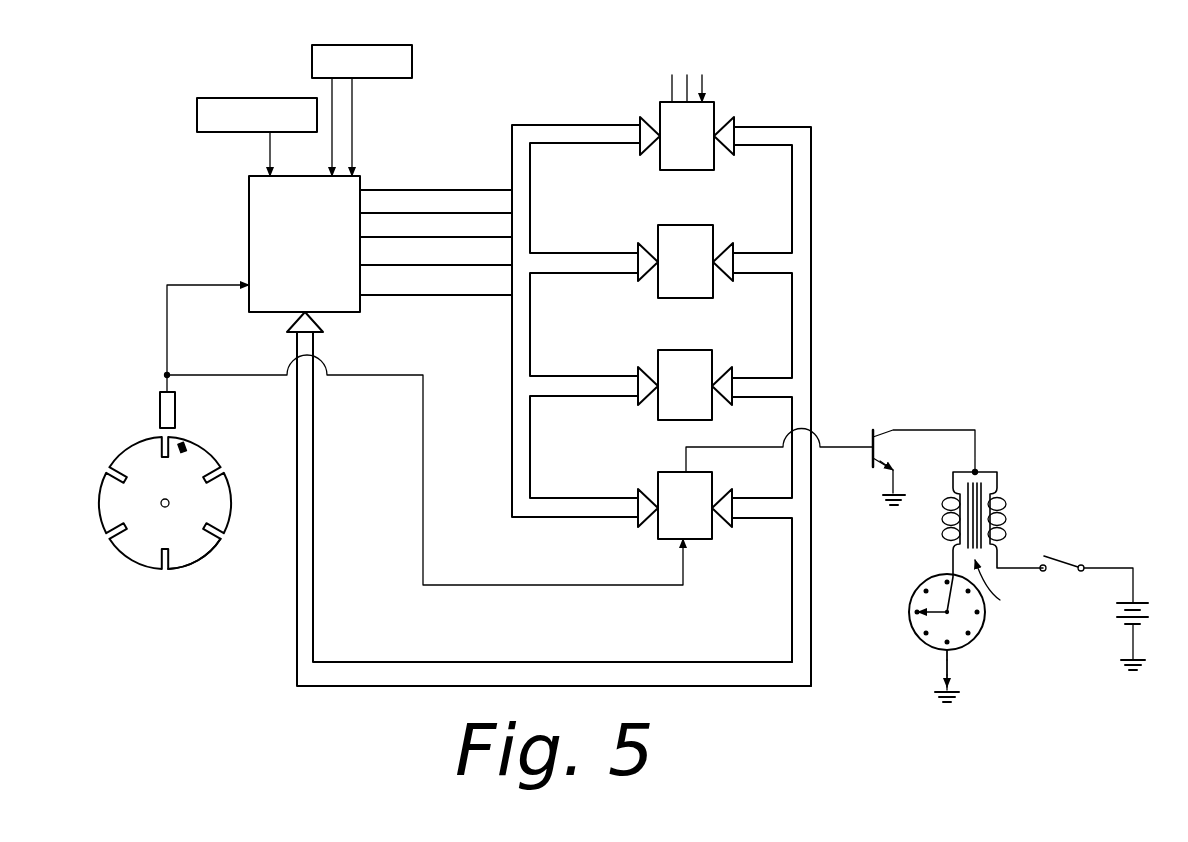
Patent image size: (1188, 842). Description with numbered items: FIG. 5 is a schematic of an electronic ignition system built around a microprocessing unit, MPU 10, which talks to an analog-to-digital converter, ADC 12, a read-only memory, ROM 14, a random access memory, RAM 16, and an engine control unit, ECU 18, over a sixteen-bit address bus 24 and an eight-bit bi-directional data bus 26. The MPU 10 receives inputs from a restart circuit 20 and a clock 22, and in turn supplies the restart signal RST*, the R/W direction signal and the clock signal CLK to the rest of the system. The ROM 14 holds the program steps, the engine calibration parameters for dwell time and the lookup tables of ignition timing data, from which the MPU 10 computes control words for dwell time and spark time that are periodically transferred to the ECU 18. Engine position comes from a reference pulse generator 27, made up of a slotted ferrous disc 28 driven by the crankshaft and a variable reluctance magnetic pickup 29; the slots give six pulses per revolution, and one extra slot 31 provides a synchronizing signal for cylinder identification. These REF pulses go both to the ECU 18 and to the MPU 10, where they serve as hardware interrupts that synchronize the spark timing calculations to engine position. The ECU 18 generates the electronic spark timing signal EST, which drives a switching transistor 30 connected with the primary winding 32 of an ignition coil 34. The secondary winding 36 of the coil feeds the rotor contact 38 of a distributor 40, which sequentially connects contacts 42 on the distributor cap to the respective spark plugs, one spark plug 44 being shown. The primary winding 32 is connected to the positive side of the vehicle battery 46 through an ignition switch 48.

The microprocessing unit (MPU) 10 is at (335, 195).
The analog-to-digital converter (ADC) 12 is at (702, 113).
The read-only memory (ROM) 14 is at (700, 235).
The random access memory (RAM) 16 is at (700, 360).
The engine control unit (ECU) 18 is at (700, 532).
The restart circuit 20 is at (198, 98).
The clock 22 is at (397, 60).
The address bus 24 is at (562, 130).
The data bus 26 is at (415, 668).
The reference pulse generator 27 is at (193, 557).
The slotted ferrous disc 28 is at (133, 455).
The variable reluctance magnetic pickup 29 is at (165, 392).
The switching transistor 30 is at (873, 430).
The extra slot 31 is at (183, 442).
The primary winding 32 is at (1000, 500).
The ignition coil 34 is at (1002, 585).
The secondary winding 36 is at (945, 515).
The rotor contact 38 is at (945, 610).
The distributor 40 is at (978, 633).
The contacts 42 is at (925, 635).
The spark plug 44 is at (947, 670).
The vehicle battery 46 is at (1127, 627).
The ignition switch 48 is at (1062, 558).